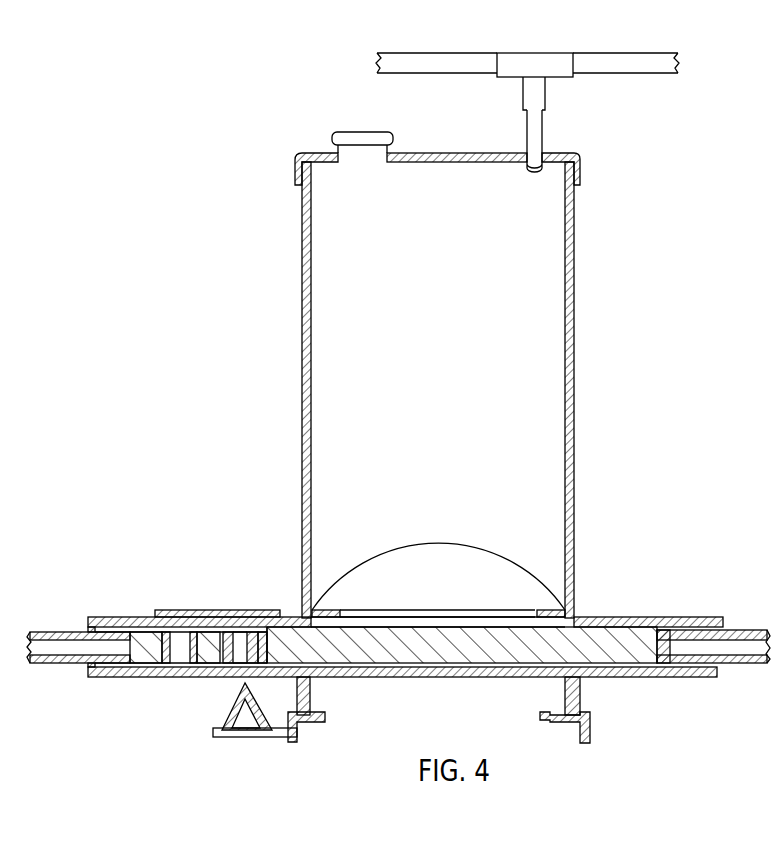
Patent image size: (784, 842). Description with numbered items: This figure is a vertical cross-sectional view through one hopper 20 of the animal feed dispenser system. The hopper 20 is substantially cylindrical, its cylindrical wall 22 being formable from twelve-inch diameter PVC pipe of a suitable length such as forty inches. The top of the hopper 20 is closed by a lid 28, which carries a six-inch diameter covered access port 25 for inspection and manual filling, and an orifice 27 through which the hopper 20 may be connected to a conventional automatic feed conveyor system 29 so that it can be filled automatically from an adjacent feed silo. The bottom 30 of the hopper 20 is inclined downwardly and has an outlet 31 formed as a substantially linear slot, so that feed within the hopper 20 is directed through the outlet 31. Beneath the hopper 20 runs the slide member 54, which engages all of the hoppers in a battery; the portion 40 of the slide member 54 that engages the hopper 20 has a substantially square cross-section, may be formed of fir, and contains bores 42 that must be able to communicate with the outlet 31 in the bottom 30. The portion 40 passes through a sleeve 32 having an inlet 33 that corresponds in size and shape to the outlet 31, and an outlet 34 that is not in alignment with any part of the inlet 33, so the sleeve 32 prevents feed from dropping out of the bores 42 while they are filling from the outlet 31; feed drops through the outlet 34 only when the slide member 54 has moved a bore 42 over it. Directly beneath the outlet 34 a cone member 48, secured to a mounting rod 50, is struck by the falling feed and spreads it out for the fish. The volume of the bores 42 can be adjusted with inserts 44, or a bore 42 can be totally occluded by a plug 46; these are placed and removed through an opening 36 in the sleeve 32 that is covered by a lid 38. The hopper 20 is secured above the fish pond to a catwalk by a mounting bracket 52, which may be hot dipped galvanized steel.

The hopper 20 is at (598, 183).
The cylindrical wall 22 is at (302, 318).
The covered access port 25 is at (378, 136).
The orifice 27 is at (540, 88).
The lid 28 is at (565, 153).
The automatic feed conveyor system 29 is at (620, 62).
The bottom 30 is at (436, 560).
The outlet 31 is at (540, 612).
The sleeve 32 is at (648, 628).
The inlet 33 is at (346, 612).
The outlet 34 is at (250, 674).
The opening 36 is at (168, 617).
The lid 38 is at (270, 612).
The portion of slide member 40 is at (142, 642).
The bore 42 is at (166, 655).
The insert 44 is at (193, 656).
The plug 46 is at (244, 640).
The cone member 48 is at (218, 722).
The mounting rod 50 is at (250, 738).
The mounting bracket 52 is at (584, 732).
The slide member 54 is at (46, 666).